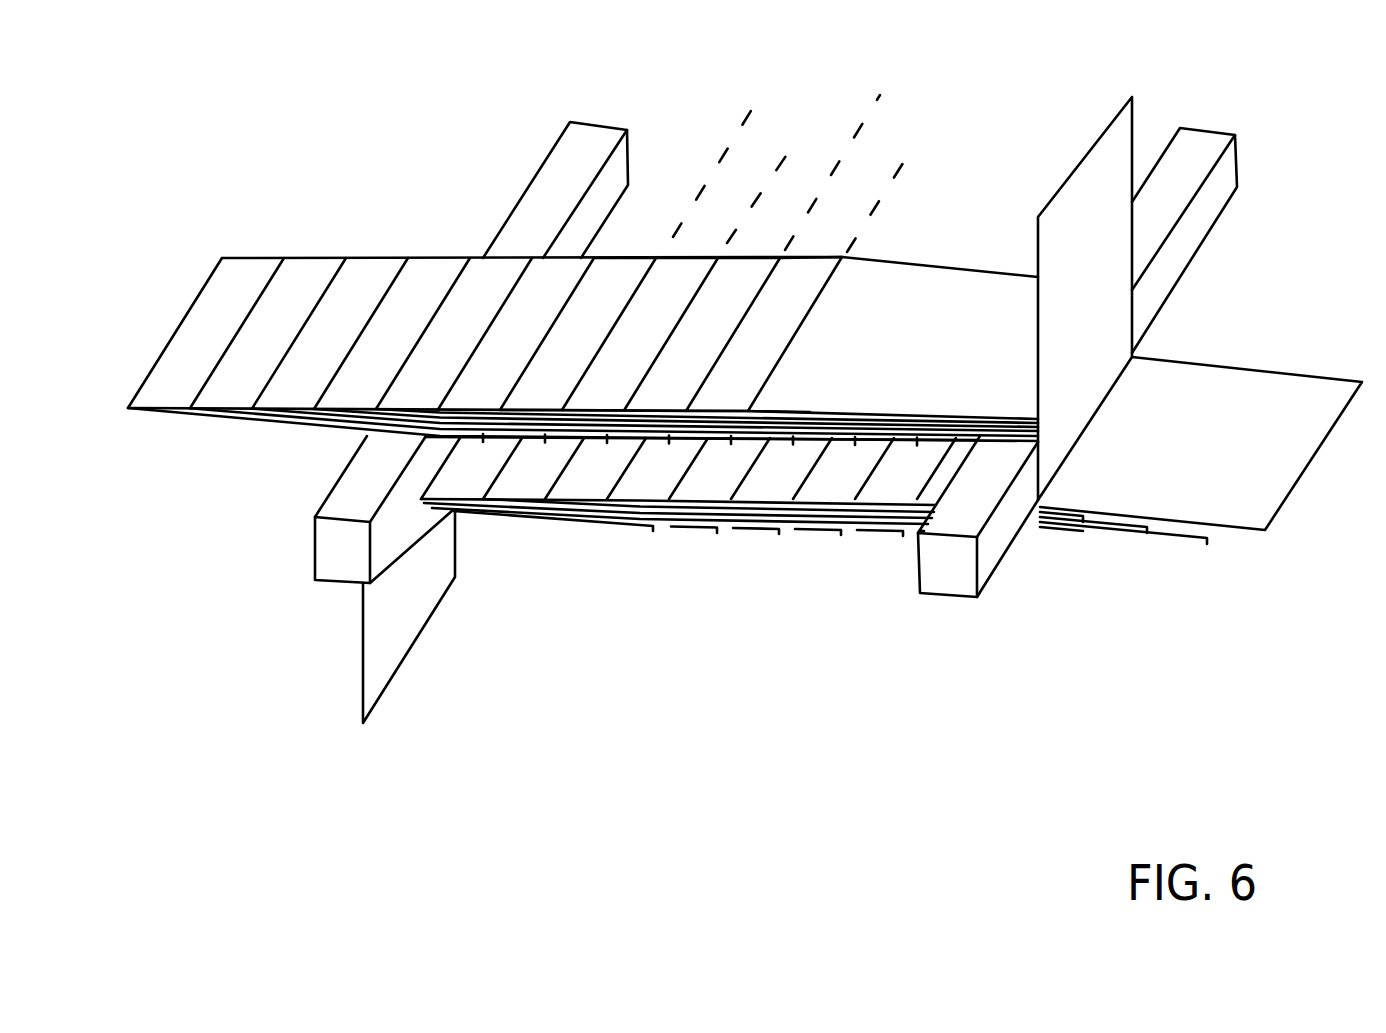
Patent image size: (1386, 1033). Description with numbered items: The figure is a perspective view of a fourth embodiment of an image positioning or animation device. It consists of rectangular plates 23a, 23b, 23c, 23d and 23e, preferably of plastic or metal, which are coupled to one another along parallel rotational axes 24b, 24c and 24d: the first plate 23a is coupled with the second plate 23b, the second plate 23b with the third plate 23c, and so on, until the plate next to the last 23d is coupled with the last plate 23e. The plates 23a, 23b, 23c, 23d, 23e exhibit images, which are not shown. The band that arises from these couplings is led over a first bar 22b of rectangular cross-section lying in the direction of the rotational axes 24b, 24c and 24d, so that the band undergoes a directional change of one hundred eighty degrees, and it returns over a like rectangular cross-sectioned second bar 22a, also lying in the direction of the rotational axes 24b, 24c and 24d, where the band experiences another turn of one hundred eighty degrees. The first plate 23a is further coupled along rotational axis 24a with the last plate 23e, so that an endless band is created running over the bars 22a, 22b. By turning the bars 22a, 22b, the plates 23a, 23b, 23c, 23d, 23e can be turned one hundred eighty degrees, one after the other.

The second bar 22a is at (992, 543).
The first bar 22b is at (338, 553).
The first plate 23a is at (663, 390).
The second plate 23b is at (725, 390).
The third plate 23c is at (806, 390).
The plate next to the last 23d is at (617, 275).
The last plate 23e is at (603, 387).
The rotational axis 24a is at (783, 161).
The rotational axis 24b is at (852, 138).
The rotational axis 24c is at (908, 166).
The rotational axis 24d is at (733, 133).